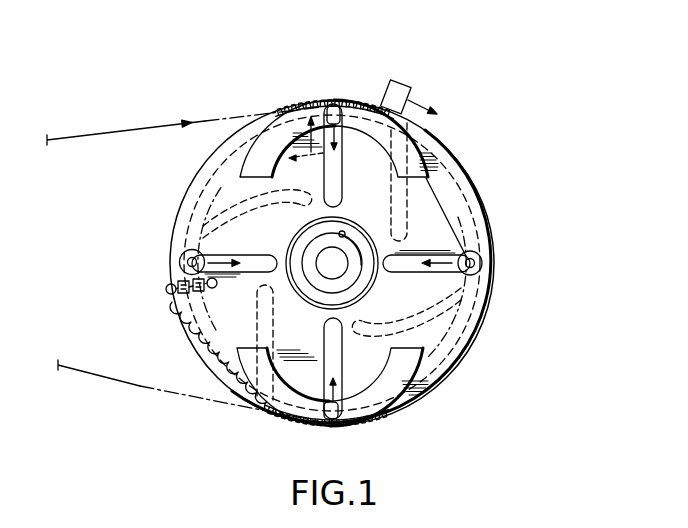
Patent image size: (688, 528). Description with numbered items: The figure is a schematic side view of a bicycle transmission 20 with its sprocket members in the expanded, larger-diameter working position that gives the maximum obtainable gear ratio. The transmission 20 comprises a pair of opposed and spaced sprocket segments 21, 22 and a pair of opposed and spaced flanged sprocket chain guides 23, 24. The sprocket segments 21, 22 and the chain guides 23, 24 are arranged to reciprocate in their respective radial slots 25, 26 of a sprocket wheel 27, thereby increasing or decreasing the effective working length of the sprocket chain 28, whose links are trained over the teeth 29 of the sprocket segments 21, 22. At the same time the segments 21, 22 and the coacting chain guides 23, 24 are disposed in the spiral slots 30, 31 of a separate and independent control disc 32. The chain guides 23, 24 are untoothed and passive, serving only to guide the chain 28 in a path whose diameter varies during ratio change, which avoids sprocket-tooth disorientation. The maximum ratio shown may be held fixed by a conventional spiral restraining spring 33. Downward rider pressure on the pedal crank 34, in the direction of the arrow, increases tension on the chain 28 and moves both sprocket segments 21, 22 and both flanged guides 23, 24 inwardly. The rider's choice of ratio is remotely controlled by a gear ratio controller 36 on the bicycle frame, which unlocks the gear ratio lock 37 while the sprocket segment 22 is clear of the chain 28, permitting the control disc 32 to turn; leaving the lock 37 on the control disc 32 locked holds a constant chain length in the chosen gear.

The transmission 20 is at (458, 78).
The sprocket segment 21 is at (300, 104).
The sprocket segment 22 is at (322, 428).
The flanged sprocket chain guide 23 is at (474, 258).
The flanged sprocket chain guide 24 is at (179, 264).
The radial slot 25 is at (341, 179).
The radial slot 26 is at (262, 256).
The sprocket wheel 27 is at (448, 152).
The sprocket chain 28 is at (104, 133).
The teeth 29 is at (343, 92).
The spiral slot 30 is at (403, 196).
The spiral slot 31 is at (203, 227).
The control disc 32 is at (463, 176).
The spiral restraining spring 33 is at (364, 286).
The pedal crank 34 is at (332, 266).
The gear ratio controller 36 is at (300, 148).
The gear ratio lock 37 is at (177, 302).